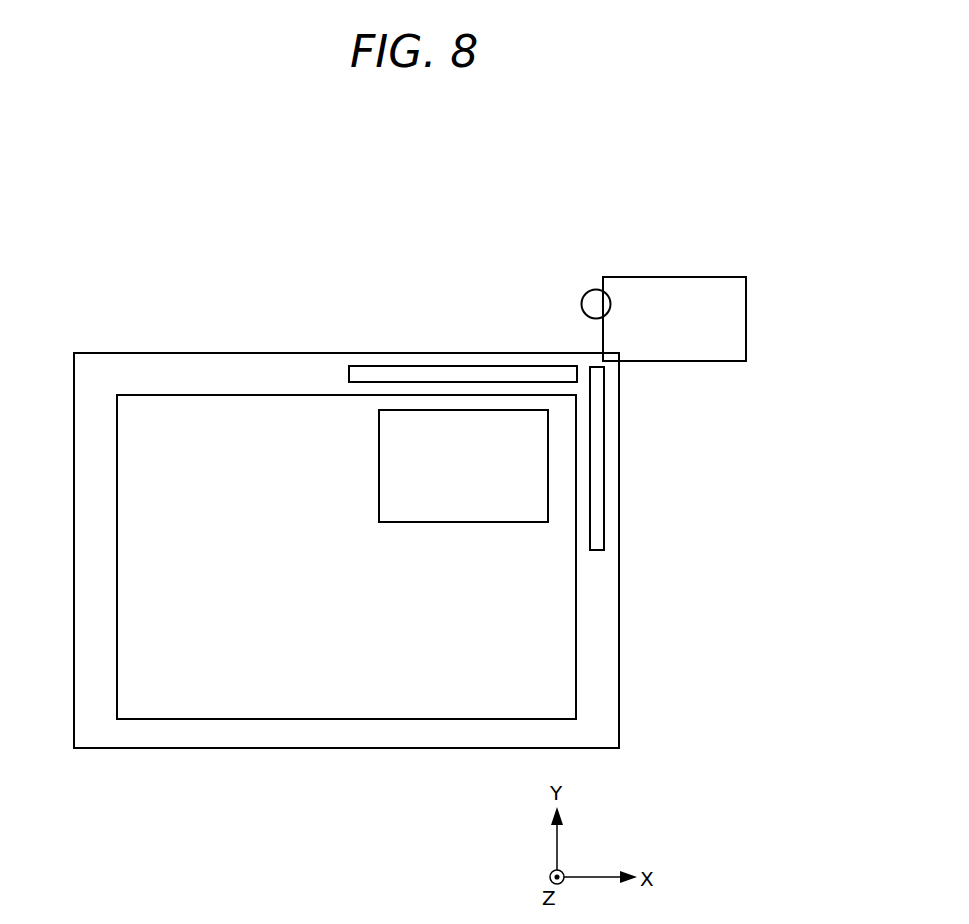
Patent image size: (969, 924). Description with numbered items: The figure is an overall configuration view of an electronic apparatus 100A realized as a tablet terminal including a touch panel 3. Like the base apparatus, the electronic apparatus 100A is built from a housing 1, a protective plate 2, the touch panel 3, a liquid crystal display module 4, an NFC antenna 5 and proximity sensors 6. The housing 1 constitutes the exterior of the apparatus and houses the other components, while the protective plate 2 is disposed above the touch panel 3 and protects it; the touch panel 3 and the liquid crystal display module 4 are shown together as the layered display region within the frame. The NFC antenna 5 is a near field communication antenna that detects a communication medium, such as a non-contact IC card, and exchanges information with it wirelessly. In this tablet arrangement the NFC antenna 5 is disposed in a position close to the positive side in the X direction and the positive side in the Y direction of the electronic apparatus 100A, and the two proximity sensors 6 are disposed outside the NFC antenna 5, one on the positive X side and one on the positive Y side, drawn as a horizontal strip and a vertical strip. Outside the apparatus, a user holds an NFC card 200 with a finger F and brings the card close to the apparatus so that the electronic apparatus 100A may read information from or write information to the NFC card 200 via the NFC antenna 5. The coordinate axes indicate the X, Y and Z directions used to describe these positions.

The electronic apparatus 100A is at (329, 268).
The housing 1 is at (378, 550).
The protective plate 2 is at (619, 557).
The touch panel 3 is at (393, 557).
The liquid crystal display module 4 is at (576, 615).
The NFC antenna 5 is at (500, 522).
The proximity sensor 6 is at (495, 365).
The NFC card 200 is at (680, 265).
The finger F is at (578, 288).